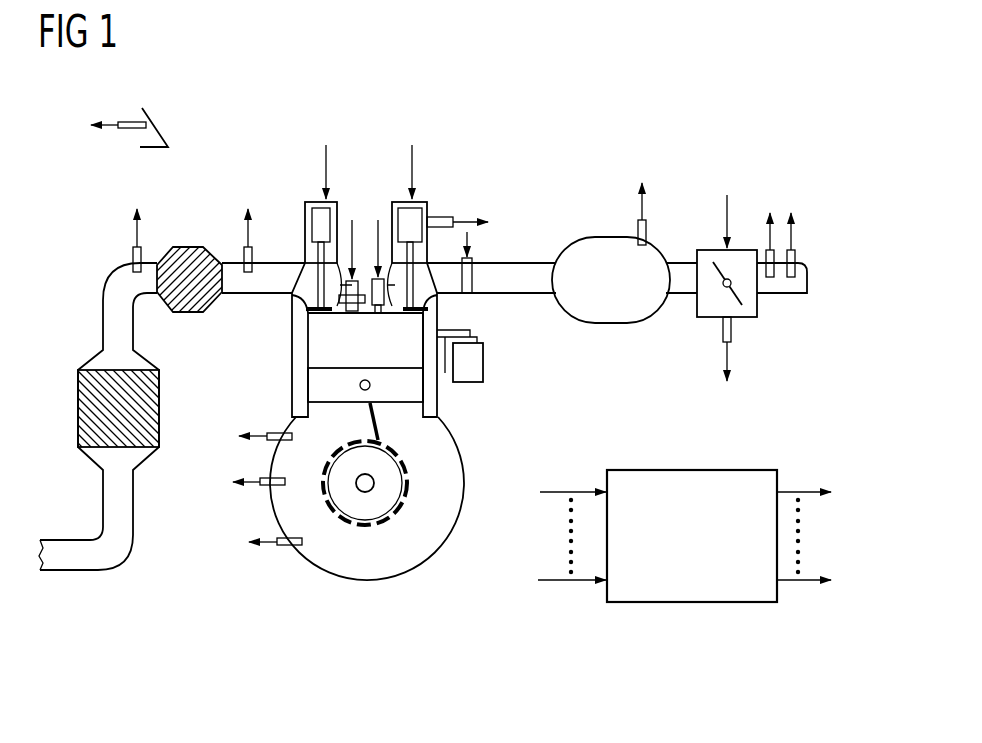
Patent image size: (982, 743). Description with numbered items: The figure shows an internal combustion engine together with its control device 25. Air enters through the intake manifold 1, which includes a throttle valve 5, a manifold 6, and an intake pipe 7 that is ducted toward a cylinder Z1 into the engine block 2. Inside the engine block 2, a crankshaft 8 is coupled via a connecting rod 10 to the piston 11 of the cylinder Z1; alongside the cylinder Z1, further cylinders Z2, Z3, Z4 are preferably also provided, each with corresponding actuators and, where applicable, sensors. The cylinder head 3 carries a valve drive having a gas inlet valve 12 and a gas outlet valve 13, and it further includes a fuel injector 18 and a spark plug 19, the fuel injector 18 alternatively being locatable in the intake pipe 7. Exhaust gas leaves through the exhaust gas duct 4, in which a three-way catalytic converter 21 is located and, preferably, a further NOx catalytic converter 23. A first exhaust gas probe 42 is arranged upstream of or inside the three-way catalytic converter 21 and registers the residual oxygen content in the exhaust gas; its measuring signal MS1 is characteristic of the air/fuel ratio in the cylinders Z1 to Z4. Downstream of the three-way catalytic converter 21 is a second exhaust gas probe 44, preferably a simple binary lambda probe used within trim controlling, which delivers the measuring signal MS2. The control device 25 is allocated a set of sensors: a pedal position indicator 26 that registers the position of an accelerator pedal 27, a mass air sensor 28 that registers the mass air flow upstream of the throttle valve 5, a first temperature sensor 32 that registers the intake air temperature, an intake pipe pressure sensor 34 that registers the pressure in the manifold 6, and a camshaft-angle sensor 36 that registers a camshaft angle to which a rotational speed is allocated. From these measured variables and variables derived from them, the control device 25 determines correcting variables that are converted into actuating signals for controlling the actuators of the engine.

The intake manifold 1 is at (641, 338).
The engine block 2 is at (270, 347).
The cylinder head 3 is at (430, 171).
The exhaust gas duct 4 is at (96, 336).
The throttle valve 5 is at (707, 256).
The manifold 6 is at (651, 311).
The intake pipe 7 is at (517, 262).
The crankshaft 8 is at (373, 484).
The connecting rod 10 is at (372, 428).
The piston 11 is at (397, 393).
The gas inlet valve 12 is at (409, 314).
The gas outlet valve 13 is at (305, 315).
The fuel injector 18 is at (378, 313).
The spark plug 19 is at (352, 315).
The three-way catalytic converter 21 is at (193, 312).
The NOx catalytic converter 23 is at (146, 416).
The control device 25 is at (727, 470).
The pedal position indicator 26 is at (127, 121).
The accelerator pedal 27 is at (159, 121).
The mass air sensor 28 is at (769, 250).
The first temperature sensor 32 is at (797, 255).
The intake pipe pressure sensor 34 is at (637, 225).
The camshaft-angle sensor 36 is at (262, 488).
The first exhaust gas probe 42 is at (256, 250).
The second exhaust gas probe 44 is at (132, 252).
The cylinder Z1 is at (431, 387).
The cylinder Z2 is at (482, 365).
The cylinder Z3 is at (480, 340).
The cylinder Z4 is at (470, 326).
The measuring signal MS1 is at (250, 210).
The second measurement signal MS2 is at (140, 210).